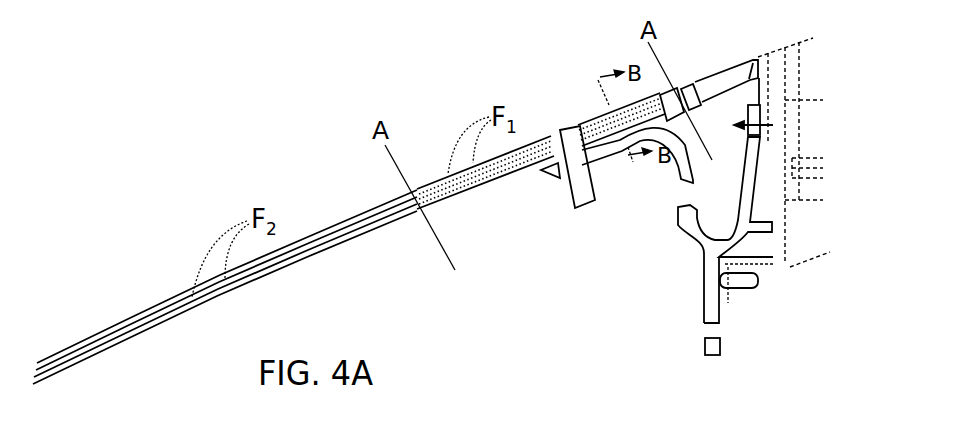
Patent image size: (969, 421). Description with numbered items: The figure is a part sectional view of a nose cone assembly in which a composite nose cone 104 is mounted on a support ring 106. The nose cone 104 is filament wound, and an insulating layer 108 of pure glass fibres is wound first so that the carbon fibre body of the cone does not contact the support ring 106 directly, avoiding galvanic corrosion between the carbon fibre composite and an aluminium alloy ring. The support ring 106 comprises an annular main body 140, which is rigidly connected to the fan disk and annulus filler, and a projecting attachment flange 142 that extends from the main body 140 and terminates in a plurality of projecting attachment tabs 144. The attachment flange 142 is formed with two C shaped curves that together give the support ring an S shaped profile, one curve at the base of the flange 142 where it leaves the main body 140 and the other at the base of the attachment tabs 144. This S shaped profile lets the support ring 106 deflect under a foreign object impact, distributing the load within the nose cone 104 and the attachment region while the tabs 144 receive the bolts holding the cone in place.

The nose cone 104 is at (128, 319).
The insulating layer 108 is at (590, 127).
The attachment tab 144 is at (611, 152).
The projecting attachment flange 142 is at (683, 172).
The annular main body 140 is at (741, 228).
The support ring 106 is at (644, 295).